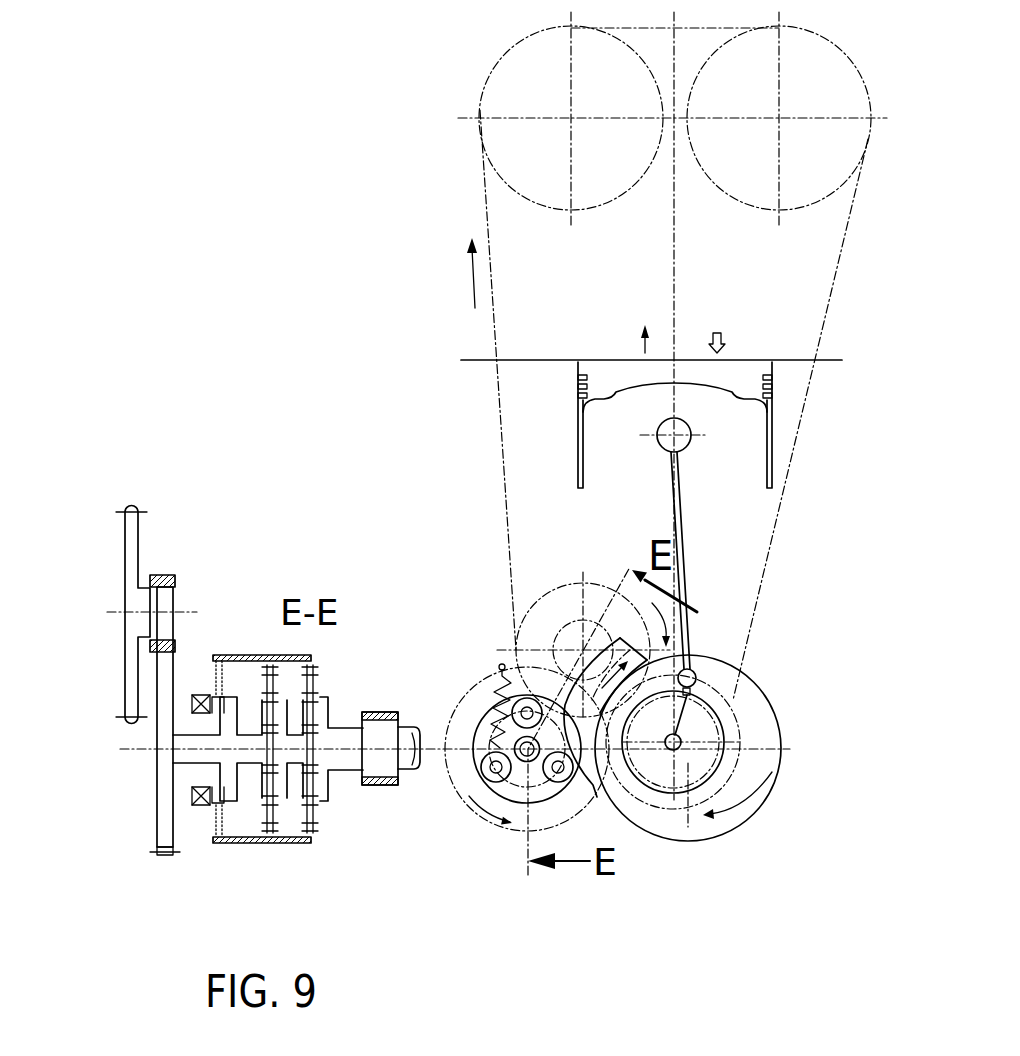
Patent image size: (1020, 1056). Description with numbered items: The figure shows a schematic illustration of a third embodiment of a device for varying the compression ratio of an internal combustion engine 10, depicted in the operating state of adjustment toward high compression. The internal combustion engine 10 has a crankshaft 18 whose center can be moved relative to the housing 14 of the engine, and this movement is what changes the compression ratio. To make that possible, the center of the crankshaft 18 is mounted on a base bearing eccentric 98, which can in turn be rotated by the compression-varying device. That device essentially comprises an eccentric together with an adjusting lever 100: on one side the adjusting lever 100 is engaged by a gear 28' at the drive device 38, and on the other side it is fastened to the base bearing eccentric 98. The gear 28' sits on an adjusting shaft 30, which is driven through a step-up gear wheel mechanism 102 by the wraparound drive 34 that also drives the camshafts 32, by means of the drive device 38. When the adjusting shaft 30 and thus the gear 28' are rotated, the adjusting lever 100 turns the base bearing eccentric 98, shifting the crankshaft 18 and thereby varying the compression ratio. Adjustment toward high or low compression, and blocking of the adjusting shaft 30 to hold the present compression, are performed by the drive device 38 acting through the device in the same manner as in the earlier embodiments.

The internal combustion engine 10 is at (461, 348).
The housing 14 is at (255, 845).
The crankshaft 18 is at (680, 719).
The gear 28' is at (427, 789).
The adjusting shaft 30 is at (343, 765).
The camshafts 32 is at (496, 99).
The wraparound drive 34 is at (505, 520).
The drive device 38 is at (100, 797).
The base bearing eccentric 98 is at (755, 803).
The adjusting lever 100 is at (597, 797).
The step-up gear wheel mechanism 102 is at (176, 646).